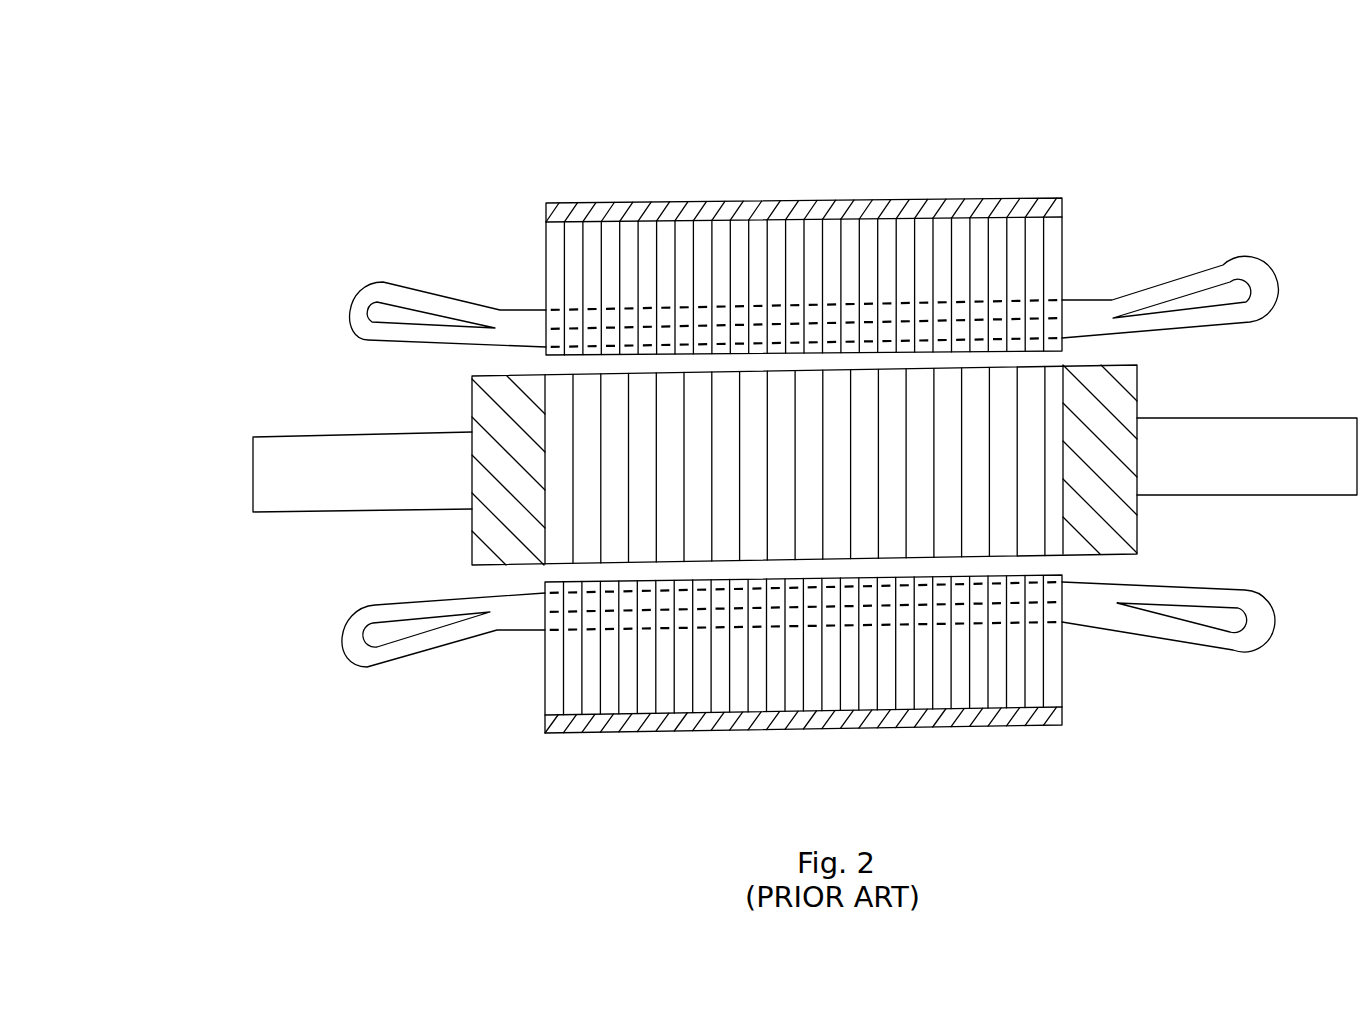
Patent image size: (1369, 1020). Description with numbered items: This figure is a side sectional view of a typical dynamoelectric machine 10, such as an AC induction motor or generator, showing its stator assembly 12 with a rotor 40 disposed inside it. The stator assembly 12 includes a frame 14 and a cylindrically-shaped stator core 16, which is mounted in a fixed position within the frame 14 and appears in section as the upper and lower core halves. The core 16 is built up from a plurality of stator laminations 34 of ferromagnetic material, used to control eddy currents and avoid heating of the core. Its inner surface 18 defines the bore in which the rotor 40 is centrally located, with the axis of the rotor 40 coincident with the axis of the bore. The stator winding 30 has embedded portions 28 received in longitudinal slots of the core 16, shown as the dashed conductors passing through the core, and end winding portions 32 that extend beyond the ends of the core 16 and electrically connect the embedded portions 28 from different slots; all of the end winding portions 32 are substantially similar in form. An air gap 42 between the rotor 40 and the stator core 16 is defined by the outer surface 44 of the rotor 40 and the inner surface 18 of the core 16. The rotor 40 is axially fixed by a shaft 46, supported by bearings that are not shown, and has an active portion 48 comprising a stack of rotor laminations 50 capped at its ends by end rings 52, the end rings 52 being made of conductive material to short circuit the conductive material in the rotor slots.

The dynamoelectric machine 10 is at (233, 97).
The stator assembly 12 is at (380, 121).
The frame 14 is at (582, 723).
The stator core 16 is at (498, 251).
The inner surface 18 is at (1057, 350).
The embedded portions 28 is at (1017, 613).
The stator winding 30 is at (341, 635).
The end winding portions 32 is at (375, 657).
The stator laminations 34 is at (870, 235).
The rotor 40 is at (253, 367).
The air gap 42 is at (533, 363).
The outer surface 44 is at (1008, 367).
The shaft 46 is at (280, 474).
The active portion 48 is at (582, 525).
The rotor laminations 50 is at (835, 540).
The end rings 52 is at (1118, 402).